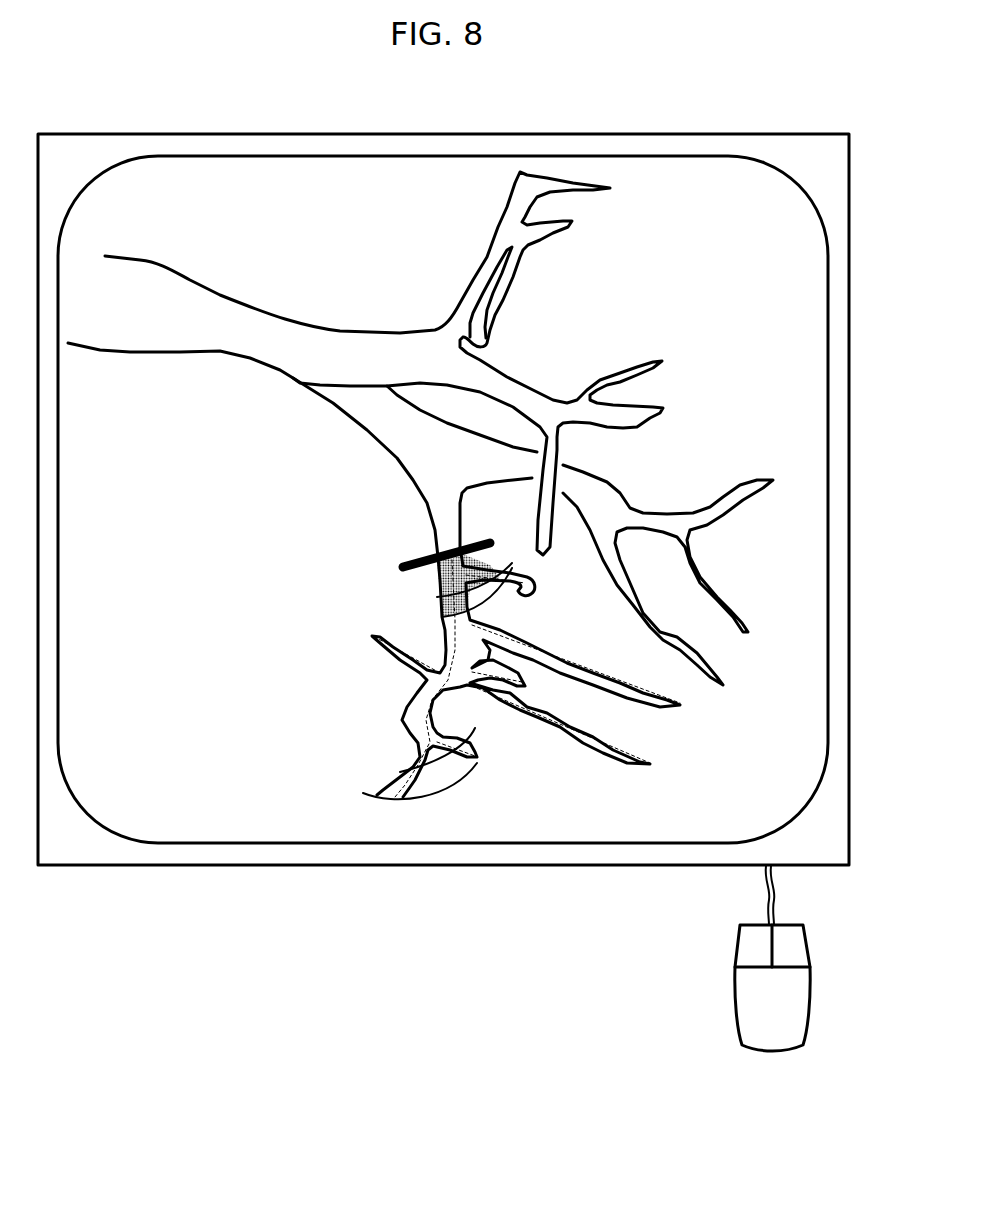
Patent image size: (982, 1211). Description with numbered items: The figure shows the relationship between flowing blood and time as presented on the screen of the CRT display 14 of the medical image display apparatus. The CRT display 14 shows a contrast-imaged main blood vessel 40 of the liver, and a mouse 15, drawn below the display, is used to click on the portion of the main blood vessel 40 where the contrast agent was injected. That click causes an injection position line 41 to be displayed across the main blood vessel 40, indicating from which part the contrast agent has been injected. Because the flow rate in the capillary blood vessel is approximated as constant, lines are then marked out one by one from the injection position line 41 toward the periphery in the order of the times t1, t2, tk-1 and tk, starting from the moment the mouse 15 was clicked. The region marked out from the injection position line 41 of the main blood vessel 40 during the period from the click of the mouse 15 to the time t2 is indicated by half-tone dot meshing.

The CRT display 14 is at (188, 867).
The mouse 15 is at (737, 995).
The main blood vessel 40 is at (330, 329).
The injection position line 41 is at (413, 560).
The time t1 is at (437, 597).
The time t2 is at (442, 617).
The time tk-1 is at (400, 772).
The time tk is at (383, 800).